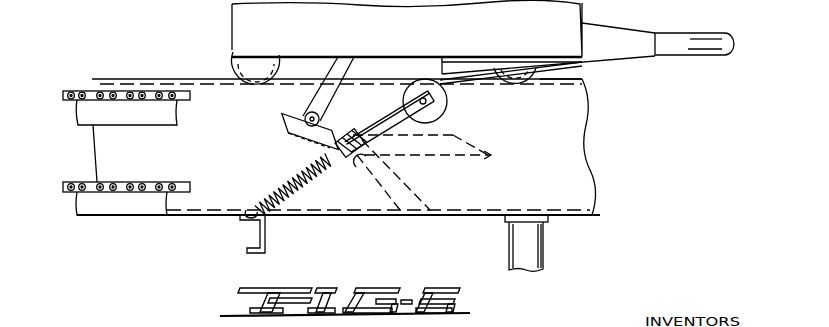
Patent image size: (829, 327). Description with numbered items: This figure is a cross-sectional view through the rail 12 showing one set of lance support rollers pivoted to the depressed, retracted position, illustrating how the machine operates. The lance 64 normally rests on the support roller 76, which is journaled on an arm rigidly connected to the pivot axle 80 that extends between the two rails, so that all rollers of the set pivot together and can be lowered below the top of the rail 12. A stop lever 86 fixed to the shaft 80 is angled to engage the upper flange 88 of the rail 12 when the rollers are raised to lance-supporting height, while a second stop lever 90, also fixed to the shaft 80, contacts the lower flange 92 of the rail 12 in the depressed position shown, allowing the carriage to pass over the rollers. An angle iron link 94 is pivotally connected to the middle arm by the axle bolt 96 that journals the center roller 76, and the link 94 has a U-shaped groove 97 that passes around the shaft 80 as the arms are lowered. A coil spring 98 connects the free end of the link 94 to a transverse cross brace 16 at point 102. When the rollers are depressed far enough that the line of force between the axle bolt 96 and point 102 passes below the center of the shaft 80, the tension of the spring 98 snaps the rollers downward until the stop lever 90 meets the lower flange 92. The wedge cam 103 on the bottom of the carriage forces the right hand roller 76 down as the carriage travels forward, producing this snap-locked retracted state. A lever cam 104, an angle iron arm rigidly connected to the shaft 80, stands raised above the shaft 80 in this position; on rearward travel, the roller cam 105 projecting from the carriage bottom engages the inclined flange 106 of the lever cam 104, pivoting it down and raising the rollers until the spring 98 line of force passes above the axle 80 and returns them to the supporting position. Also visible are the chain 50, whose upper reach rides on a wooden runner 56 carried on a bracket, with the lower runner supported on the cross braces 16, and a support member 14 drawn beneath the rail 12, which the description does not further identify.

The rail 12 is at (578, 140).
The support post 14 is at (537, 255).
The transverse cross brace 16 is at (267, 243).
The chain 50 is at (90, 92).
The wooden runner 56 is at (85, 115).
The lance 64 is at (707, 40).
The lance support roller 76 is at (420, 84).
The pivot axle 80 is at (365, 128).
The stop lever 86 is at (432, 148).
The upper flange 88 is at (577, 80).
The second stop lever 90 is at (404, 198).
The lower flange 92 is at (462, 213).
The angle iron link 94 is at (387, 117).
The axle bolt 96 is at (433, 100).
The U-shaped groove 97 is at (360, 162).
The coil spring 98 is at (295, 178).
The spring connection point 102 is at (247, 222).
The wedge cam 103 is at (490, 38).
The lever cam 104 is at (290, 118).
The roller cam 105 is at (320, 100).
The inclined flange 106 is at (300, 135).